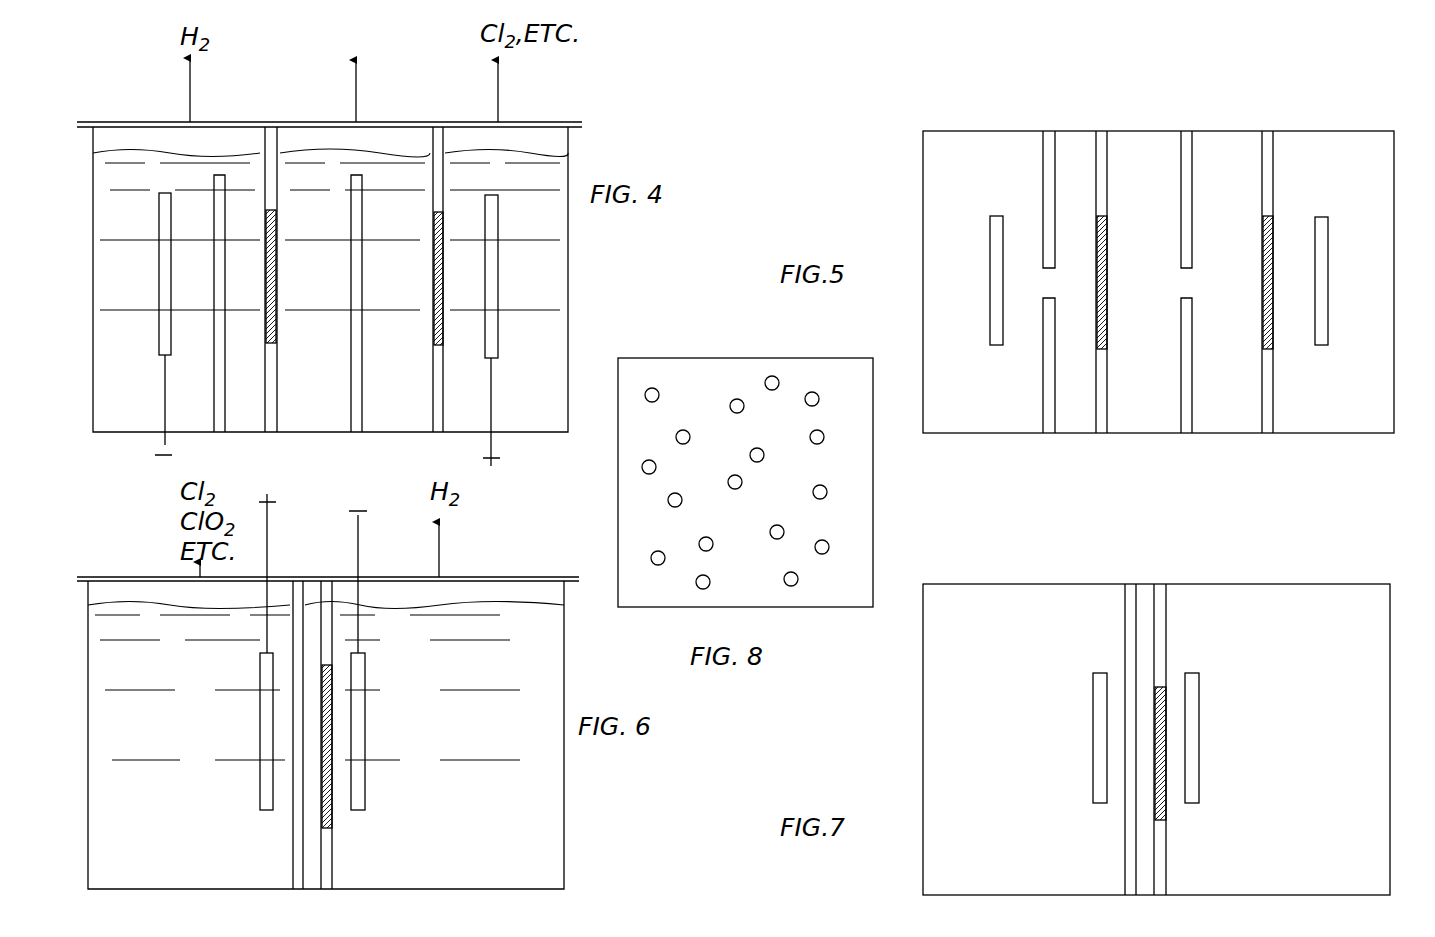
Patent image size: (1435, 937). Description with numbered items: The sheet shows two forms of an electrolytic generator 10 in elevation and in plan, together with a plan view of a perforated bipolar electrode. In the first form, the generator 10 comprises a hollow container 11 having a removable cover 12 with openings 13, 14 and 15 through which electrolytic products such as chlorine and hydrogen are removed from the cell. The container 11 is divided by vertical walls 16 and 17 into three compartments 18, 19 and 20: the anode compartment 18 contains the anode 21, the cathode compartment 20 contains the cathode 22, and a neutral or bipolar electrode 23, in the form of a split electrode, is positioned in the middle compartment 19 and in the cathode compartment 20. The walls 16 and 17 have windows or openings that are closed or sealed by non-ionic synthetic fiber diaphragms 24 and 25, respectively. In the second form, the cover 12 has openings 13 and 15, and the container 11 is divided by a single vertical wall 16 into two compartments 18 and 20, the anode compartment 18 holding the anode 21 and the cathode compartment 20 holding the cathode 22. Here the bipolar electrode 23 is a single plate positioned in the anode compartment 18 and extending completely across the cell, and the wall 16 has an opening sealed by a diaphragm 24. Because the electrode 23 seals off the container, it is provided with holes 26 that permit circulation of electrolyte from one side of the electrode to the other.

In FIG. 4, the electrolytic generator 10 is at (580, 150).
In FIG. 6, the electrolytic generator 10 is at (80, 663).
In FIG. 5, the electrolytic generator 10 is at (912, 197).
In FIG. 7, the electrolytic generator 10 is at (912, 762).
In FIG. 4, the hollow container 11 is at (120, 422).
In FIG. 6, the hollow container 11 is at (87, 835).
In FIG. 5, the hollow container 11 is at (933, 420).
In FIG. 7, the hollow container 11 is at (923, 722).
In FIG. 4, the removable cover 12 is at (120, 122).
In FIG. 6, the removable cover 12 is at (108, 577).
In FIG. 4, the opening 13 is at (497, 122).
In FIG. 6, the opening 13 is at (198, 576).
In FIG. 4, the opening 14 is at (355, 122).
In FIG. 4, the opening 15 is at (189, 122).
In FIG. 6, the opening 15 is at (440, 577).
In FIG. 4, the vertical wall 16 is at (441, 432).
In FIG. 6, the vertical wall 16 is at (328, 873).
In FIG. 5, the vertical wall 16 is at (1262, 425).
In FIG. 7, the vertical wall 16 is at (1166, 873).
In FIG. 4, the vertical wall 17 is at (276, 432).
In FIG. 5, the vertical wall 17 is at (1102, 420).
In FIG. 4, the anode compartment 18 is at (527, 422).
In FIG. 6, the anode compartment 18 is at (131, 872).
In FIG. 5, the anode compartment 18 is at (1310, 420).
In FIG. 7, the anode compartment 18 is at (923, 874).
In FIG. 4, the middle compartment 19 is at (386, 422).
In FIG. 5, the middle compartment 19 is at (1140, 420).
In FIG. 4, the cathode compartment 20 is at (97, 378).
In FIG. 6, the cathode compartment 20 is at (545, 857).
In FIG. 5, the cathode compartment 20 is at (975, 420).
In FIG. 7, the cathode compartment 20 is at (1375, 853).
In FIG. 4, the anode 21 is at (500, 268).
In FIG. 6, the anode 21 is at (260, 731).
In FIG. 5, the anode 21 is at (1328, 286).
In FIG. 7, the anode 21 is at (1093, 724).
In FIG. 4, the cathode 22 is at (160, 268).
In FIG. 6, the cathode 22 is at (365, 731).
In FIG. 5, the cathode 22 is at (990, 286).
In FIG. 7, the cathode 22 is at (1199, 724).
In FIG. 4, the bipolar electrode 23 is at (351, 214).
In FIG. 6, the bipolar electrode 23 is at (293, 848).
In FIG. 5, the bipolar electrode 23 is at (1043, 188).
In FIG. 7, the bipolar electrode 23 is at (1125, 836).
In FIG. 8, the bipolar electrode 23 is at (860, 523).
In FIG. 4, the diaphragm 24 is at (432, 268).
In FIG. 6, the diaphragm 24 is at (330, 818).
In FIG. 5, the diaphragm 24 is at (1108, 284).
In FIG. 7, the diaphragm 24 is at (1166, 812).
In FIG. 4, the diaphragm 25 is at (278, 266).
In FIG. 5, the diaphragm 25 is at (1262, 286).
In FIG. 8, the holes 26 is at (773, 380).